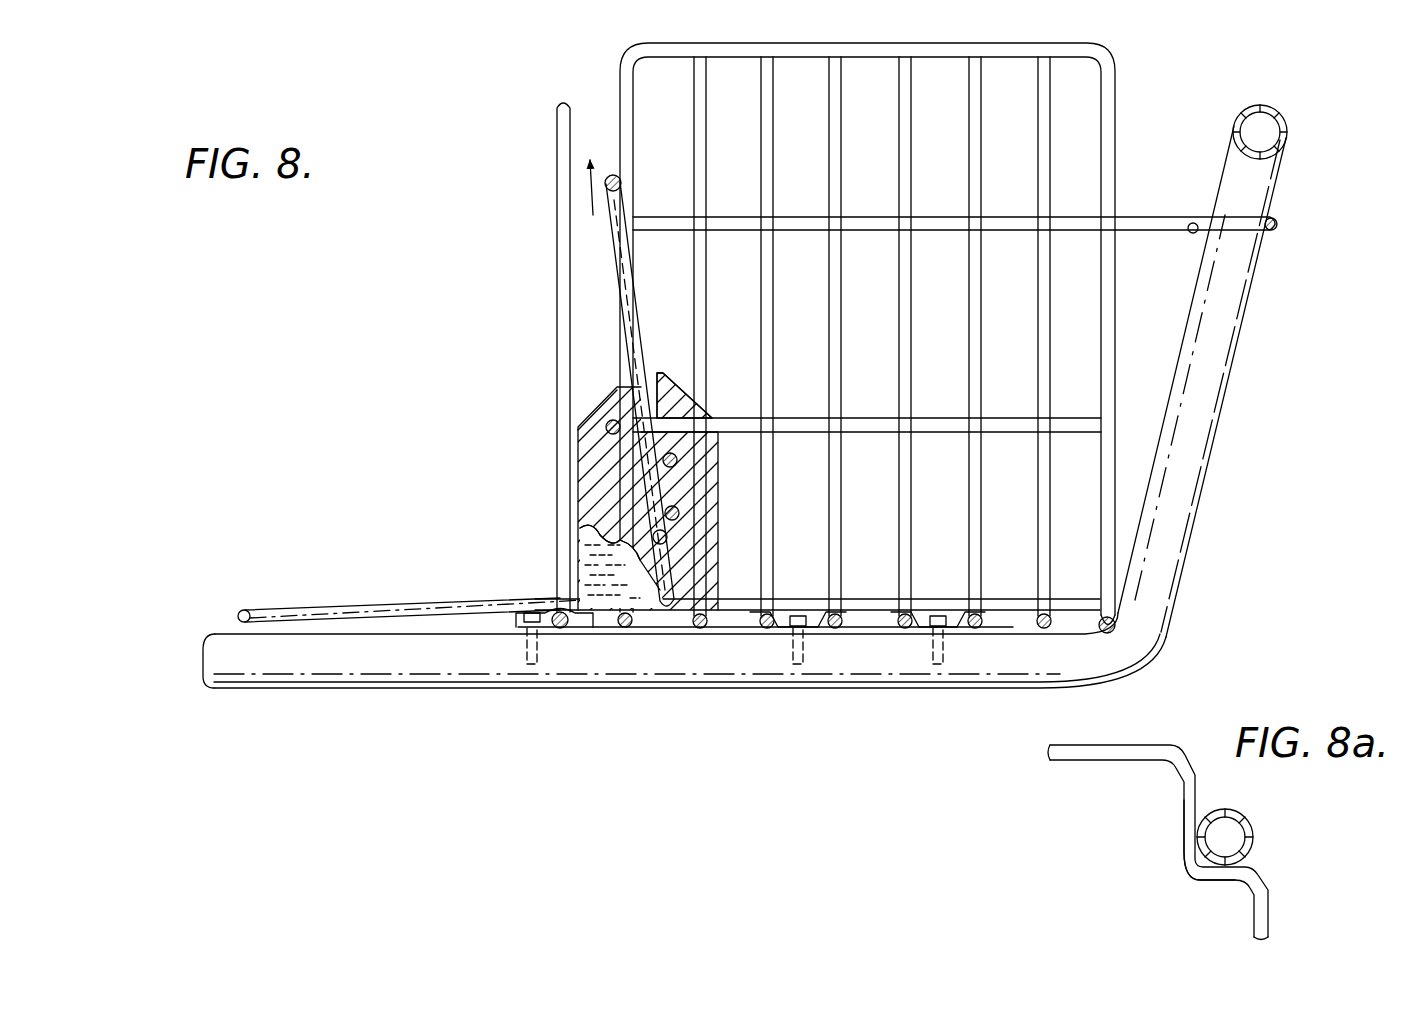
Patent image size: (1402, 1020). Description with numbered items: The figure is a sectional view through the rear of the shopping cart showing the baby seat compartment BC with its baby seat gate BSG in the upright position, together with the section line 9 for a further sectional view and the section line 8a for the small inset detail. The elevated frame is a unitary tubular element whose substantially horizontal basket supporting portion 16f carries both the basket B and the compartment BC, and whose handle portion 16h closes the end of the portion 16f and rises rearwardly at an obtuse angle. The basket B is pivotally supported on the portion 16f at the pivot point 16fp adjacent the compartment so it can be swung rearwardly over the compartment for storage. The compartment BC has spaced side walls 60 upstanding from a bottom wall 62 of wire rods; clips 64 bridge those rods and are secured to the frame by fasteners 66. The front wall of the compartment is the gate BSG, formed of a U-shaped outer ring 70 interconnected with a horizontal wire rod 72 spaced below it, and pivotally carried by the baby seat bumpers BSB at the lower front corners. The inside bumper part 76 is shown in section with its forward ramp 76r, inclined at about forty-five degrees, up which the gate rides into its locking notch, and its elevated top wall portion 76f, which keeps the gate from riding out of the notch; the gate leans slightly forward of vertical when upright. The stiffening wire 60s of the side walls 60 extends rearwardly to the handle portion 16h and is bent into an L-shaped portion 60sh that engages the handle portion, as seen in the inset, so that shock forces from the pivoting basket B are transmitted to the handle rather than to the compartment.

In FIG. 8, the section line 9- 9 is at (667, 75).
In FIG. 8, the section line 8a- 8a is at (1118, 197).
In FIG. 8, the baby seat compartment BC is at (1128, 76).
In FIG. 8, the side walls 60 is at (900, 97).
In FIG. 8, the stiffening wire 60s is at (1138, 232).
In FIG. 8A, the stiffening wire 60s is at (1072, 765).
In FIG. 8A, the L-shaped portion 60sh is at (1184, 835).
In FIG. 8, the bottom wall 62 is at (1040, 630).
In FIG. 8, the clips 64 is at (822, 630).
In FIG. 8, the fasteners 66 is at (796, 612).
In FIG. 8, the U-shaped outer ring 70 is at (633, 219).
In FIG. 8, the horizontal wire rod 72 is at (668, 537).
In FIG. 8, the inside bumper part 76 is at (578, 447).
In FIG. 8, the forward ramp 76r is at (598, 403).
In FIG. 8, the top wall portion 76f is at (670, 380).
In FIG. 8, the basket B is at (557, 353).
In FIG. 8, the baby seat gate BSG is at (340, 615).
In FIG. 8, the baby seat bumpers BSB is at (578, 498).
In FIG. 8, the basket supporting portion 16f is at (312, 660).
In FIG. 8, the pivot point 16fp is at (563, 630).
In FIG. 8, the handle portion 16h is at (1212, 312).
In FIG. 8A, the handle portion 16h is at (1255, 837).